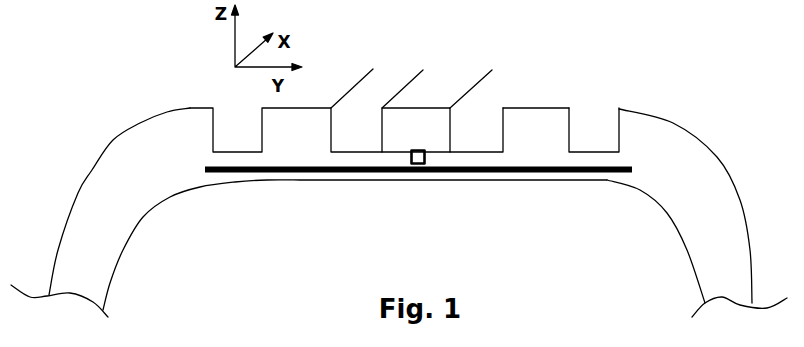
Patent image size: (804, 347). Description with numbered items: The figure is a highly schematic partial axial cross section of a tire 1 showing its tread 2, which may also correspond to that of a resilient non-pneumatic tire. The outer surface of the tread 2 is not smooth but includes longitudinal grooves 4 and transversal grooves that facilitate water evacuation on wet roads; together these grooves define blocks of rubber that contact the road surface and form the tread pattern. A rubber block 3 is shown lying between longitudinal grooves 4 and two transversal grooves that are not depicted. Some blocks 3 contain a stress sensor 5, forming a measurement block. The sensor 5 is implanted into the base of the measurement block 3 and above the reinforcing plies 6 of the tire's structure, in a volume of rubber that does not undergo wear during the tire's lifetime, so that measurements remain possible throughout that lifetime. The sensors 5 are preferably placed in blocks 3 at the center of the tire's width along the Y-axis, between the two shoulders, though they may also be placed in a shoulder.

The tire 1 is at (181, 92).
The tread 2 is at (546, 94).
The rubber block 3 is at (435, 135).
The longitudinal grooves 4 is at (360, 127).
The stress sensor 5 is at (412, 172).
The reinforcing plies 6 is at (238, 173).